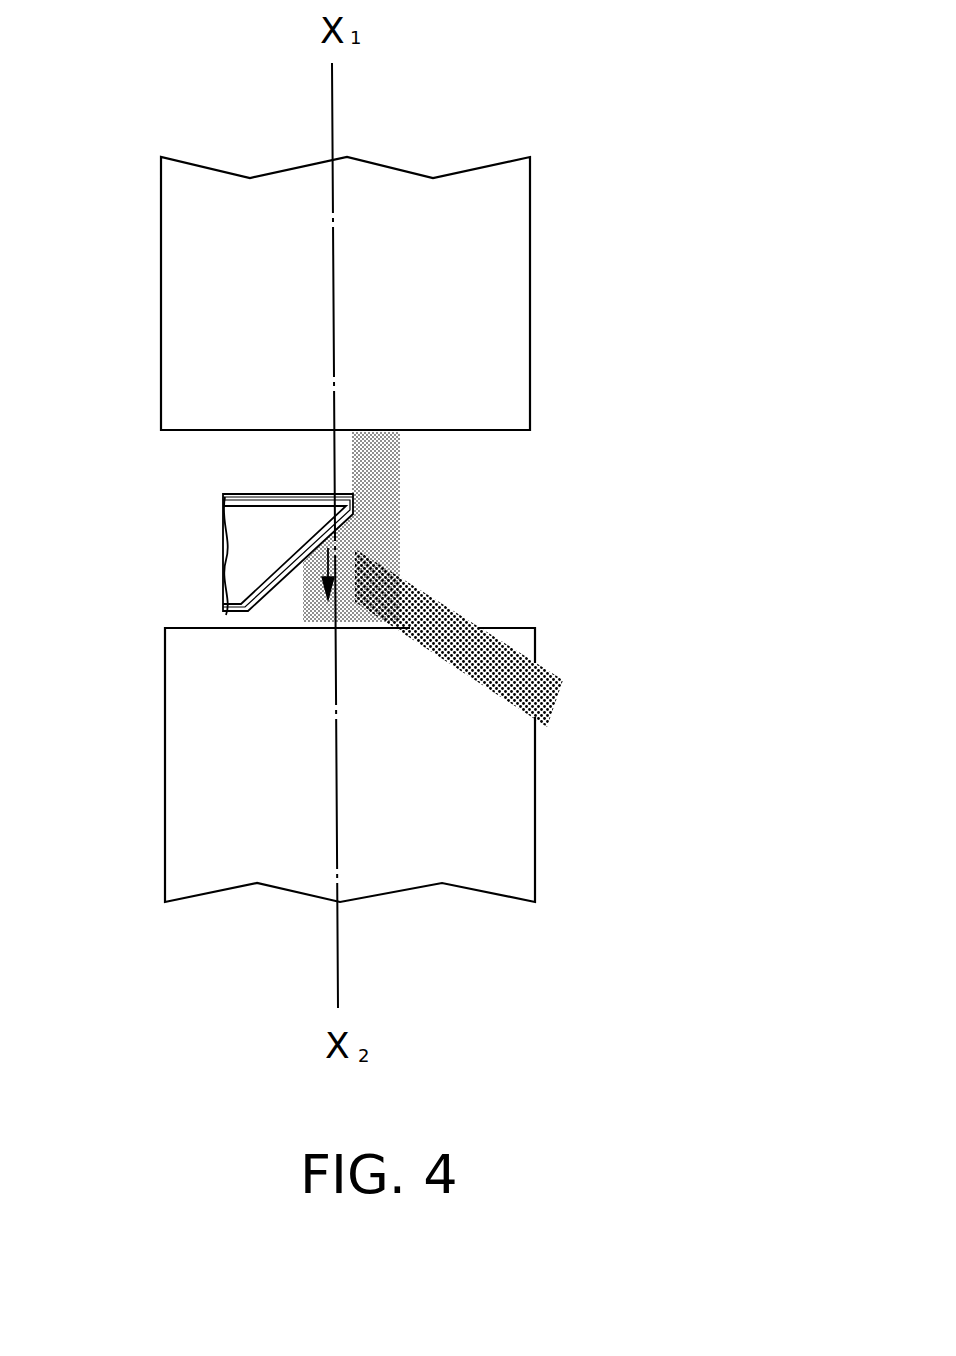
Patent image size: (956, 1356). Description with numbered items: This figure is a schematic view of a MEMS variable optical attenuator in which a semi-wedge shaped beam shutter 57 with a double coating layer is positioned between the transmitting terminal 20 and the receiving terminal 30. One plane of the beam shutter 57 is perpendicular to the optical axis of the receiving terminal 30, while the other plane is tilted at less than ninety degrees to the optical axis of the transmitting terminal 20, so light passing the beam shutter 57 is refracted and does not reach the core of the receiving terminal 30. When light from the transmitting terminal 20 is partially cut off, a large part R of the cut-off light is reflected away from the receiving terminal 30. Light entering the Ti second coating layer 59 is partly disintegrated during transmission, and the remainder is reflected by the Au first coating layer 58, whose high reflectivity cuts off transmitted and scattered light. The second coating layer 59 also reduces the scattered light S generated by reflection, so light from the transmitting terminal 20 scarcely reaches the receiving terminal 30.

The transmitting terminal 20 is at (502, 805).
The receiving terminal 30 is at (496, 280).
The beam shutter 57 is at (240, 560).
The first coating layer 58 is at (232, 497).
The second coating layer 59 is at (257, 495).
The scattered light S is at (318, 568).
The reflected part of the cut-off light R is at (435, 602).